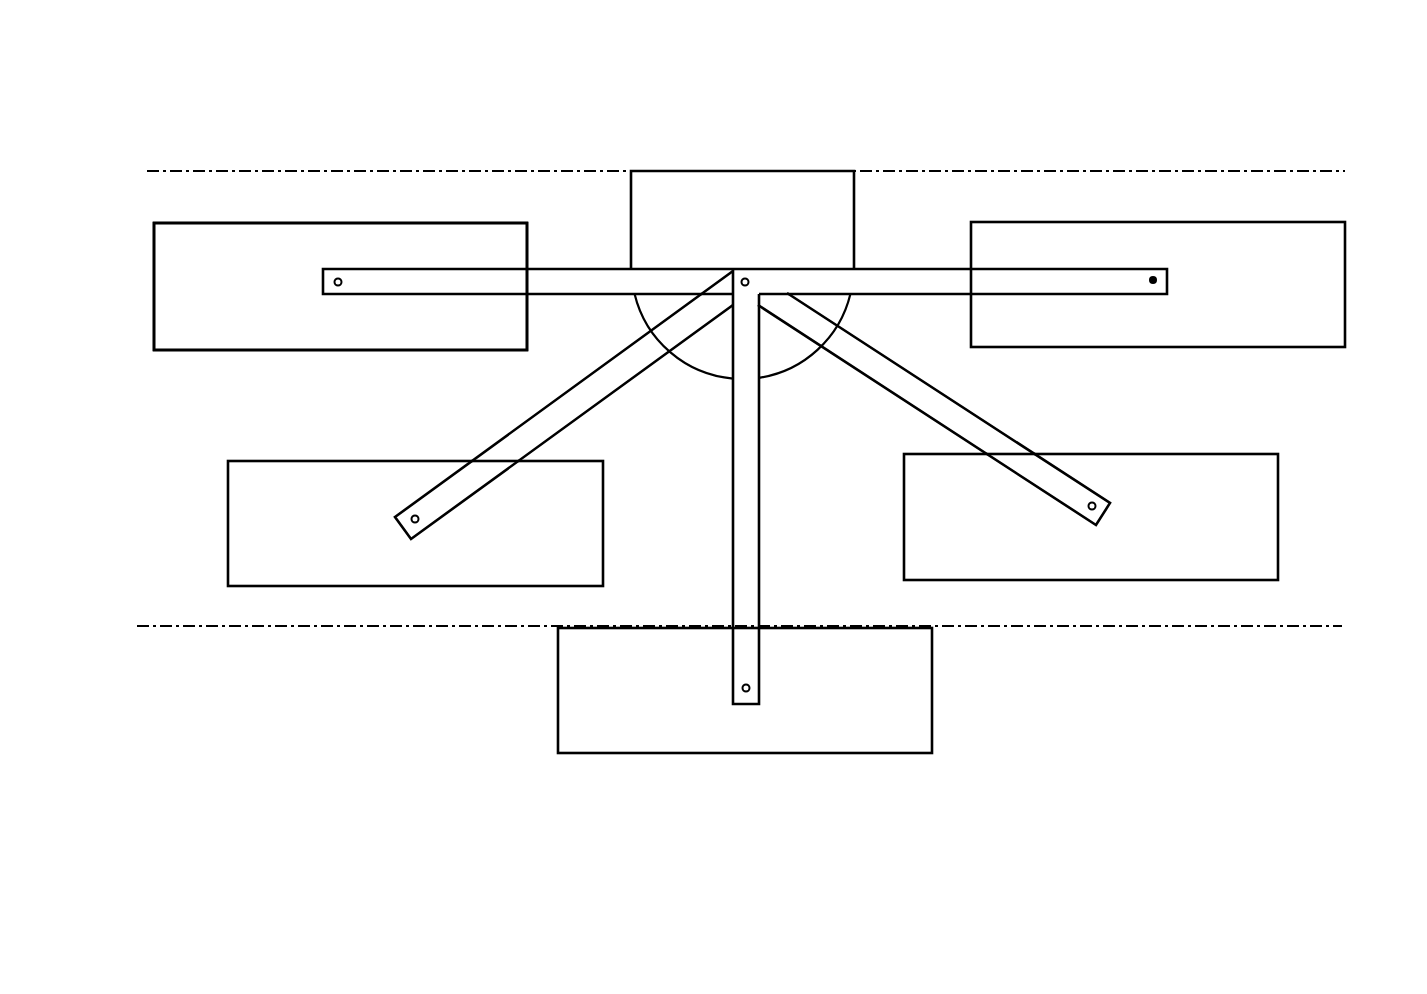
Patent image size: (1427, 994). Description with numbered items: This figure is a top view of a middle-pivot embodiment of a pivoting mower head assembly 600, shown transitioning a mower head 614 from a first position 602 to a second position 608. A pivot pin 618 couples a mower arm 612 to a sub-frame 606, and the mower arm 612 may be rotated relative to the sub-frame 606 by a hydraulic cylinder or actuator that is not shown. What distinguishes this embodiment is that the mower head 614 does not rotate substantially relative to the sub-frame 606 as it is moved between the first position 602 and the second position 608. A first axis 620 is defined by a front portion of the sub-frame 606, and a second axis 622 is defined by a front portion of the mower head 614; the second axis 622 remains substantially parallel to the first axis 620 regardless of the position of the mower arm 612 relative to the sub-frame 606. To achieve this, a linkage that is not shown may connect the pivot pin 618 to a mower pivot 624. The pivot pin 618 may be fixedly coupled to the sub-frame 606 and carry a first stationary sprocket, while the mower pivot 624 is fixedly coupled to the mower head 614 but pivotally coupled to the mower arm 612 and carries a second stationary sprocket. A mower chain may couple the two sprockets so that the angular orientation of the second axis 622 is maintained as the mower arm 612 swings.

The pivoting mower head assembly 600 is at (204, 112).
The first position 602 is at (1288, 368).
The sub-frame 606 is at (688, 218).
The second position 608 is at (138, 246).
The mower arm 612 is at (920, 279).
The mower head 614 is at (208, 353).
The pivot pin 618 is at (746, 277).
The first axis 620 is at (495, 170).
The second axis 622 is at (323, 628).
The mower pivot 624 is at (1157, 280).